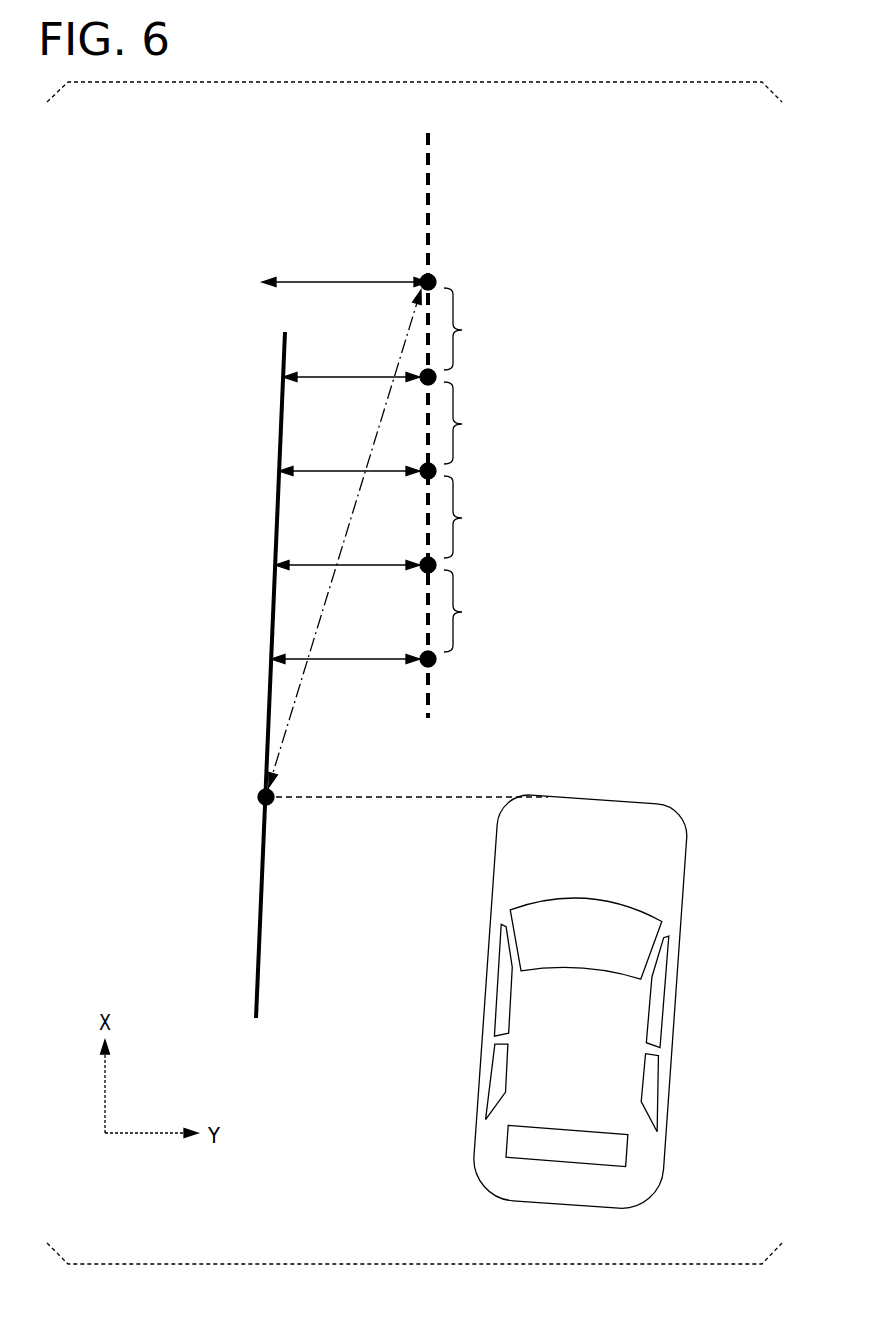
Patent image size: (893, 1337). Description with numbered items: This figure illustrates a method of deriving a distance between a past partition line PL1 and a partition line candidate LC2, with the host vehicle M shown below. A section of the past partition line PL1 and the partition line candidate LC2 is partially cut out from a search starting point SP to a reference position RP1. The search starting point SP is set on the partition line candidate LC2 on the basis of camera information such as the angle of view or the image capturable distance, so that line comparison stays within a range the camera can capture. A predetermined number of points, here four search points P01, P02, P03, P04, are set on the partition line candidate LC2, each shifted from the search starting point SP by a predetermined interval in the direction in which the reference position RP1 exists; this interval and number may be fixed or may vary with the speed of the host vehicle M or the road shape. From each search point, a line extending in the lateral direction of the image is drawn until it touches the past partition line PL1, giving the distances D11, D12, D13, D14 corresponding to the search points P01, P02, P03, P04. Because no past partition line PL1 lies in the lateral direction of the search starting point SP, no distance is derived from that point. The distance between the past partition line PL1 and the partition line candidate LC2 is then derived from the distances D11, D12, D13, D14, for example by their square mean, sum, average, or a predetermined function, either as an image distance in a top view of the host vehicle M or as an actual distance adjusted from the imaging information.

The partition line candidate LC2 is at (432, 164).
The search starting point SP is at (437, 280).
The search point P01 is at (437, 378).
The search point P02 is at (437, 472).
The search point P03 is at (437, 566).
The search point P04 is at (437, 663).
The distance D11 is at (351, 362).
The distance D12 is at (349, 457).
The distance D13 is at (347, 551).
The distance D14 is at (345, 645).
The reference position RP1 is at (258, 797).
The past partition line PL1 is at (260, 913).
The host vehicle M is at (683, 920).